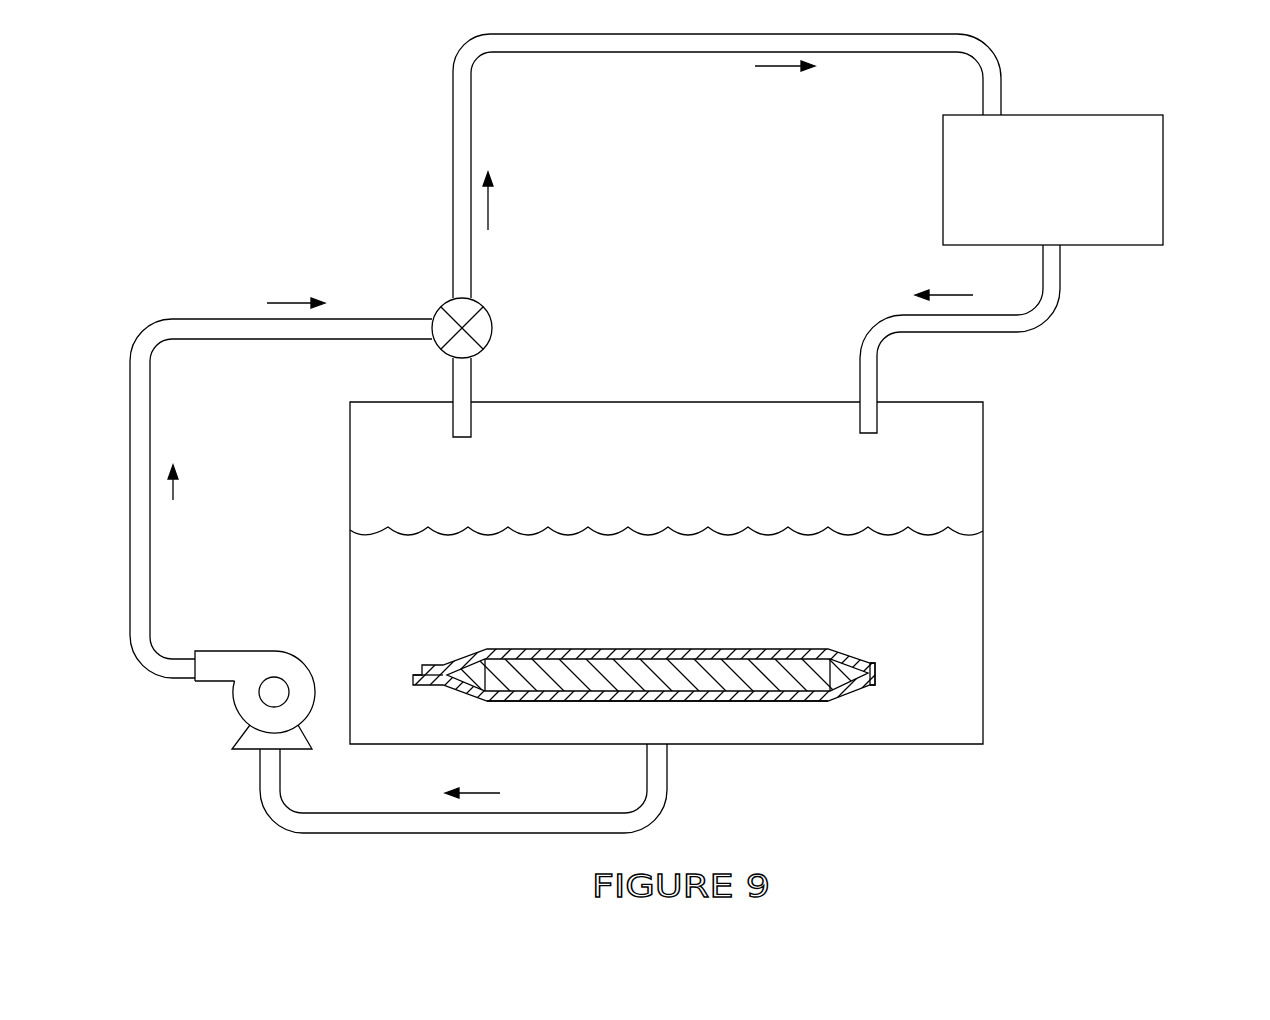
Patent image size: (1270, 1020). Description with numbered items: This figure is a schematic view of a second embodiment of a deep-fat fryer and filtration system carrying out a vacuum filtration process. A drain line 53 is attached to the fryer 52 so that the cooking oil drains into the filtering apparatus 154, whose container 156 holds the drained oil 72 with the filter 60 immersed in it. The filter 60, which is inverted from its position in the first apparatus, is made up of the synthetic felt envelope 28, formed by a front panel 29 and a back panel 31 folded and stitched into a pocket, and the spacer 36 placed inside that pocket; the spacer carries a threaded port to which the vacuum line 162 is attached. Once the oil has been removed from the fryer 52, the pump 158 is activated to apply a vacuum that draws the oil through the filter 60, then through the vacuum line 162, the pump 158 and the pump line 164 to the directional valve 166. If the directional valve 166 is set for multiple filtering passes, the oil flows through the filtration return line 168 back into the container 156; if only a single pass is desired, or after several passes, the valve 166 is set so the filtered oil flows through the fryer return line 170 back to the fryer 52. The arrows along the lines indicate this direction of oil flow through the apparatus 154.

The filtering apparatus 154 is at (1110, 494).
The container 156 is at (985, 428).
The liquid 72 is at (966, 568).
The filter 60 is at (664, 697).
The back panel 31 is at (660, 648).
The filter envelope 28 is at (884, 667).
The spacer grid 36 is at (817, 678).
The front panel 29 is at (708, 708).
The pump 158 is at (253, 648).
The vacuum line 162 is at (403, 832).
The pump line 164 is at (152, 410).
The directional valve 166 is at (497, 313).
The filtration return line 168 is at (475, 378).
The fryer return line 170 is at (473, 136).
The fryer 52 is at (1164, 188).
The drain line 53 is at (1063, 273).